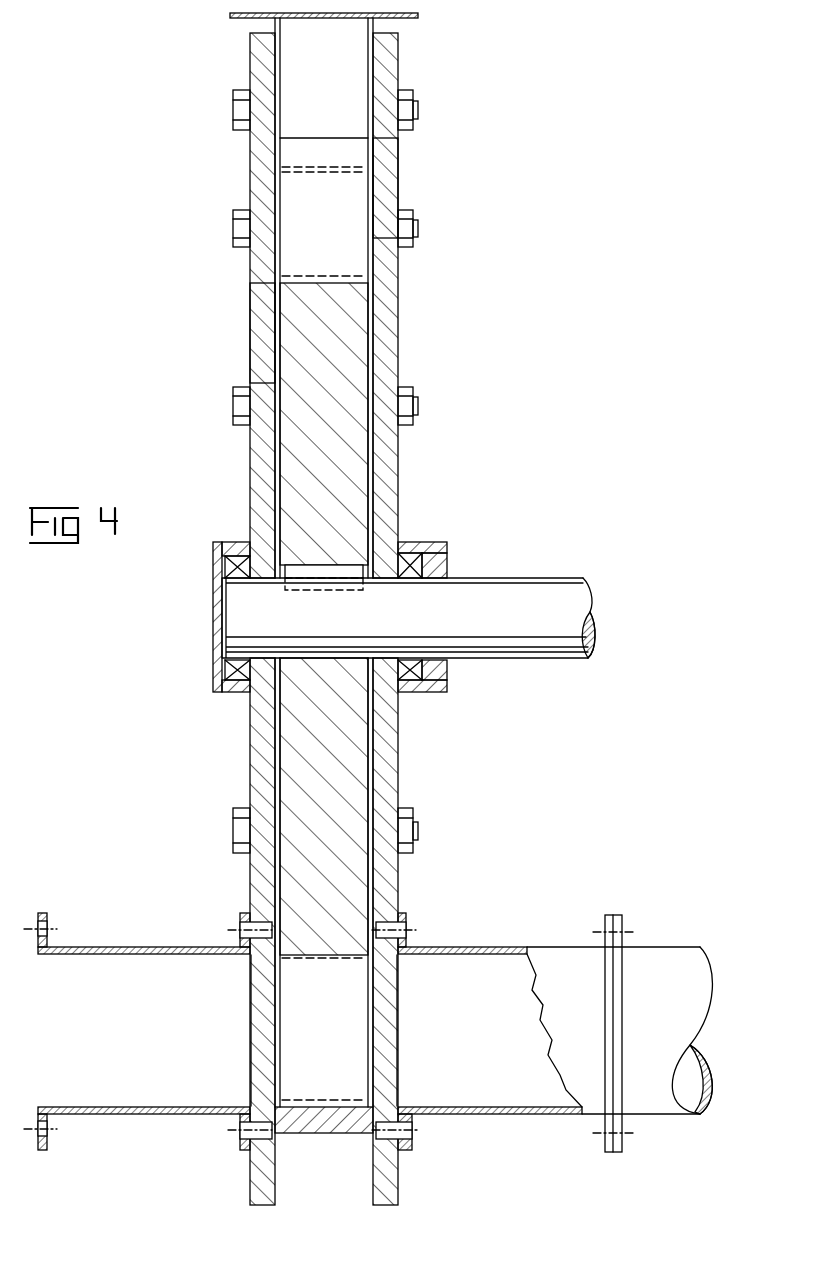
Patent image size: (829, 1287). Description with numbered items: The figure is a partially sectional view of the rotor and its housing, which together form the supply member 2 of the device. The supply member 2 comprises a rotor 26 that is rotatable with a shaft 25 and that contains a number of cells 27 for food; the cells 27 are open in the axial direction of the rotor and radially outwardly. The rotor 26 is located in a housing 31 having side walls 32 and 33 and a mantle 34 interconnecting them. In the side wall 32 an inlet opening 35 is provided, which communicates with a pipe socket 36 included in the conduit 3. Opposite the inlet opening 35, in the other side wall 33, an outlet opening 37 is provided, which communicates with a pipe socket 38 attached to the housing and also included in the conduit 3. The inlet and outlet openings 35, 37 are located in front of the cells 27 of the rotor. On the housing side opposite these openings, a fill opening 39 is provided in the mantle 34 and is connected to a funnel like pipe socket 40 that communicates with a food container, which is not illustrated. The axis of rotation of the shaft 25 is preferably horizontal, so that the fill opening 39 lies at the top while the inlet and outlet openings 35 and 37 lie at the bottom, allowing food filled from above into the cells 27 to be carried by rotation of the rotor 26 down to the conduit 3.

The supply member 2 is at (431, 433).
The conduit 3 is at (558, 945).
The shaft 25 is at (507, 597).
The rotor 26 is at (338, 488).
The cells 27 is at (350, 247).
The housing 31 is at (400, 324).
The side wall 32 is at (262, 285).
The side wall 33 is at (388, 183).
The mantle 34 is at (313, 1115).
The inlet opening 35 is at (258, 1005).
The pipe socket 36 is at (117, 947).
The outlet opening 37 is at (388, 1002).
The pipe socket 38 is at (485, 947).
The fill opening 39 is at (325, 122).
The funnel like pipe socket 40 is at (279, 62).